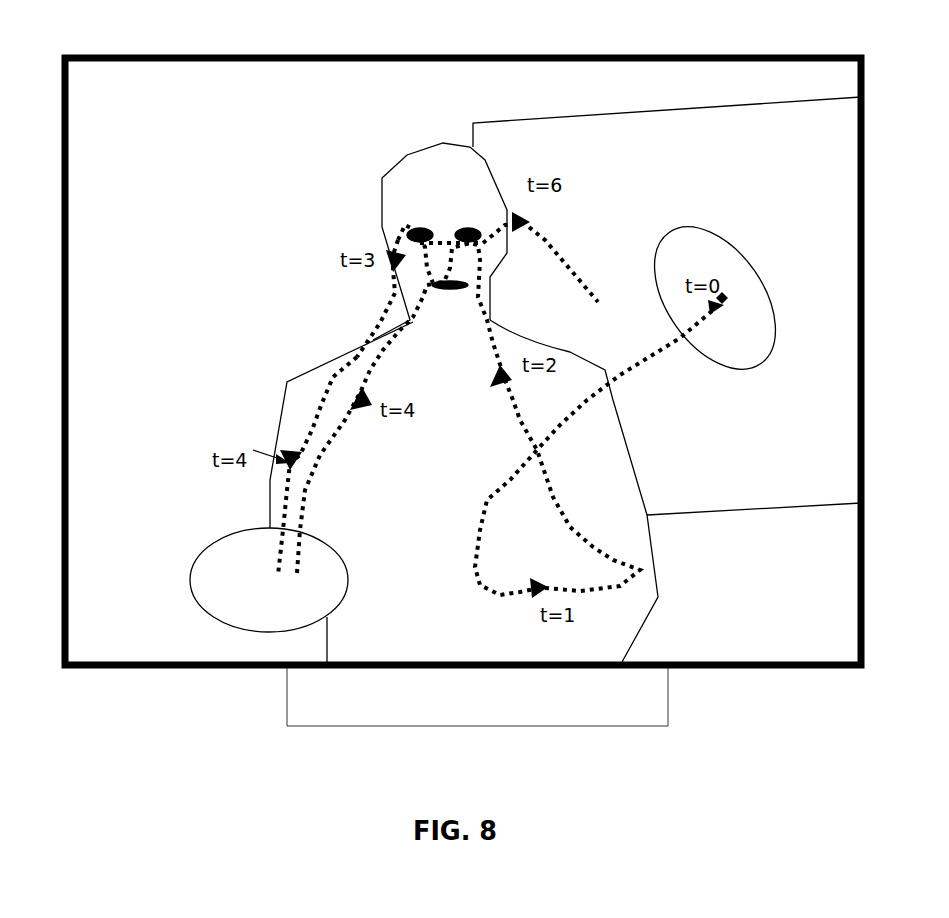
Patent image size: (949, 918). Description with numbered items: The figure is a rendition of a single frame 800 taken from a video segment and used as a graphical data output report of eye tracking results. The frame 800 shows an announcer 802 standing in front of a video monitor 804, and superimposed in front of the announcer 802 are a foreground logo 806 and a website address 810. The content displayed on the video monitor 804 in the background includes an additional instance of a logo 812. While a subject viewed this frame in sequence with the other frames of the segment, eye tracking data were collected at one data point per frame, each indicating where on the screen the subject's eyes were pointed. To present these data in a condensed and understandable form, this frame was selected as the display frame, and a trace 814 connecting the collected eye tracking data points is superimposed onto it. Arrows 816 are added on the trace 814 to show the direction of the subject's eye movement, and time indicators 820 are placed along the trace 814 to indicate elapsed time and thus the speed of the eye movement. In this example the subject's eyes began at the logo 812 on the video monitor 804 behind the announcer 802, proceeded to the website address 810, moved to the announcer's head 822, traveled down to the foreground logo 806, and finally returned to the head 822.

The frame 800 is at (882, 70).
The announcer 802 is at (400, 642).
The video monitor 804 is at (852, 199).
The logo 806 is at (225, 550).
The website address 810 is at (714, 612).
The logo 812 is at (763, 346).
The trace 814 is at (315, 368).
The arrows 816 is at (386, 260).
The time indicators 820 is at (224, 430).
The head 822 is at (398, 177).